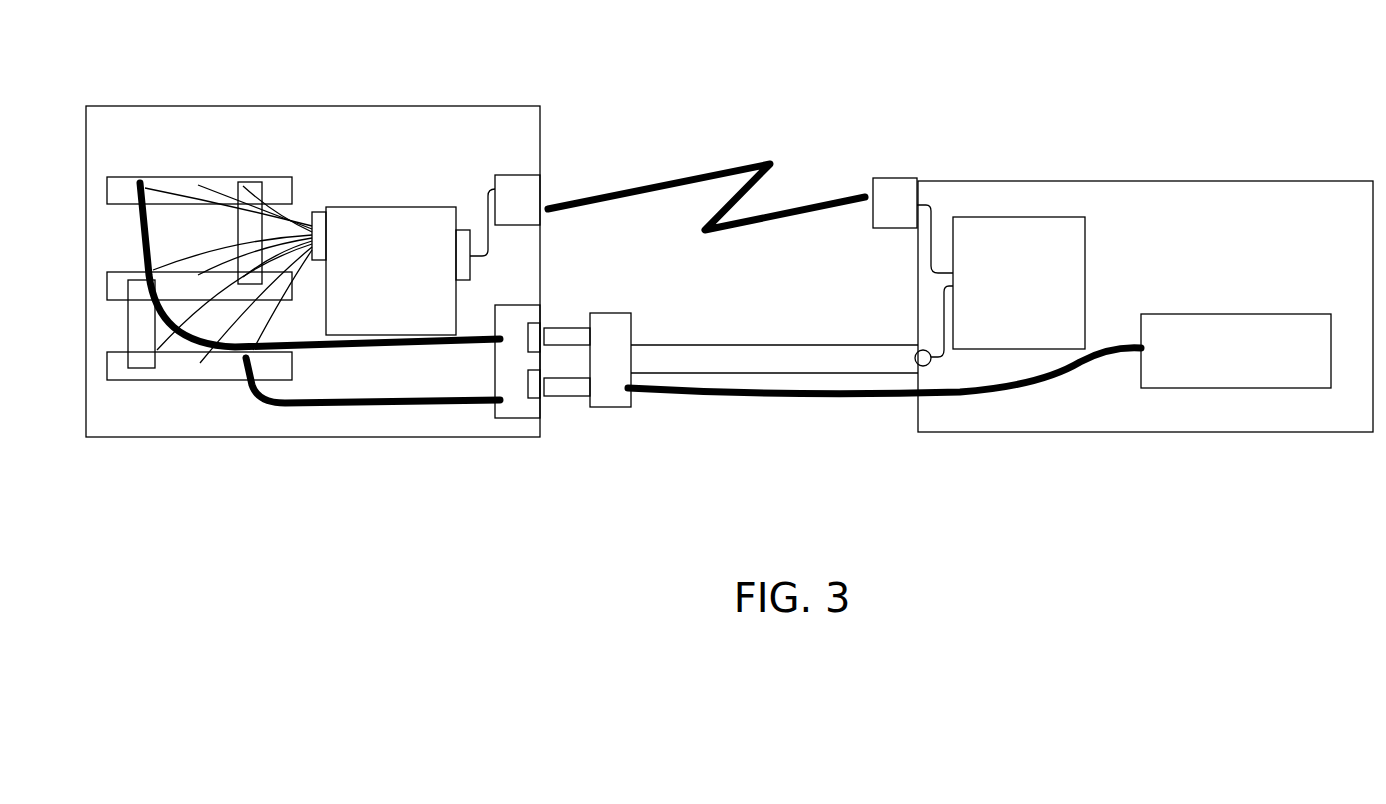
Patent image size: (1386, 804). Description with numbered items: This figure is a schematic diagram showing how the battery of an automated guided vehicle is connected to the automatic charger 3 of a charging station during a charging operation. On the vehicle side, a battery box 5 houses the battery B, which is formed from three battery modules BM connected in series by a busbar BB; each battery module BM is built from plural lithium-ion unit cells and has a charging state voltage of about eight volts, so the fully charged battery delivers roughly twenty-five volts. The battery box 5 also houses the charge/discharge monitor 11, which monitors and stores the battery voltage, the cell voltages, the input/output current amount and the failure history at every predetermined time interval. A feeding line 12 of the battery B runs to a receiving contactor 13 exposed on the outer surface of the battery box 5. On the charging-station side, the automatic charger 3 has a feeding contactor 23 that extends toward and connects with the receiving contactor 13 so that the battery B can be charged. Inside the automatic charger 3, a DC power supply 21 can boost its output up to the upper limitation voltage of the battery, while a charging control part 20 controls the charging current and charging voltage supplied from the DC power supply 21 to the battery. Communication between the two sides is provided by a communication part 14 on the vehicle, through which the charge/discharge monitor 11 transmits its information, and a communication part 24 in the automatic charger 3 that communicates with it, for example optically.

The automatic charger 3 is at (1208, 180).
The battery box 5 is at (477, 104).
The battery B is at (139, 160).
The busbar BB is at (255, 180).
The battery module BM is at (187, 183).
The charge/discharge monitor 11 is at (391, 271).
The feeding line 12 is at (333, 352).
The receiving contactor 13 is at (522, 410).
The communication part 14 is at (536, 186).
The charging control part 20 is at (1000, 285).
The DC power supply 21 is at (1232, 314).
The feeding contactor 23 is at (613, 398).
The communication part 24 is at (893, 195).